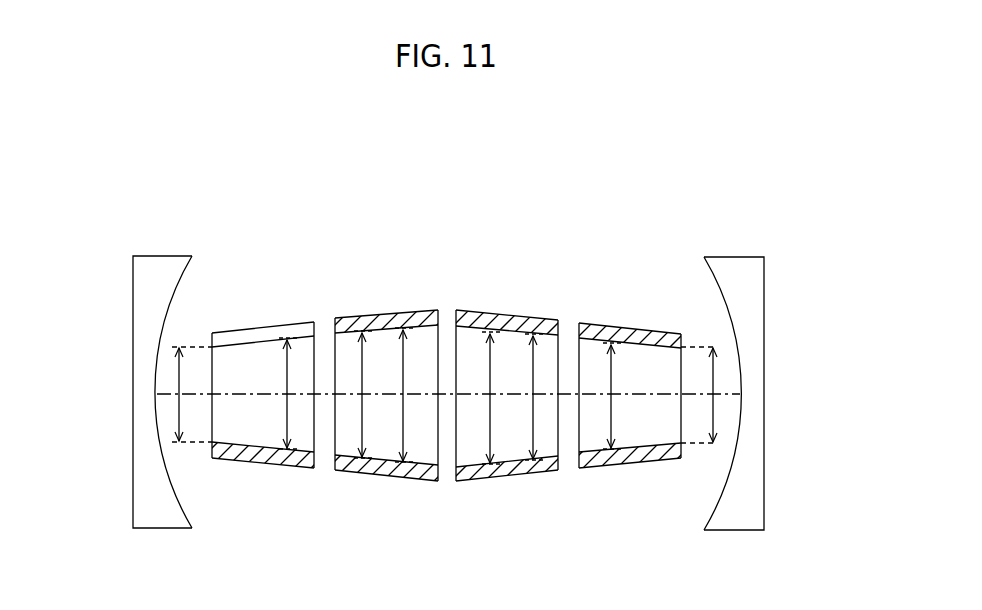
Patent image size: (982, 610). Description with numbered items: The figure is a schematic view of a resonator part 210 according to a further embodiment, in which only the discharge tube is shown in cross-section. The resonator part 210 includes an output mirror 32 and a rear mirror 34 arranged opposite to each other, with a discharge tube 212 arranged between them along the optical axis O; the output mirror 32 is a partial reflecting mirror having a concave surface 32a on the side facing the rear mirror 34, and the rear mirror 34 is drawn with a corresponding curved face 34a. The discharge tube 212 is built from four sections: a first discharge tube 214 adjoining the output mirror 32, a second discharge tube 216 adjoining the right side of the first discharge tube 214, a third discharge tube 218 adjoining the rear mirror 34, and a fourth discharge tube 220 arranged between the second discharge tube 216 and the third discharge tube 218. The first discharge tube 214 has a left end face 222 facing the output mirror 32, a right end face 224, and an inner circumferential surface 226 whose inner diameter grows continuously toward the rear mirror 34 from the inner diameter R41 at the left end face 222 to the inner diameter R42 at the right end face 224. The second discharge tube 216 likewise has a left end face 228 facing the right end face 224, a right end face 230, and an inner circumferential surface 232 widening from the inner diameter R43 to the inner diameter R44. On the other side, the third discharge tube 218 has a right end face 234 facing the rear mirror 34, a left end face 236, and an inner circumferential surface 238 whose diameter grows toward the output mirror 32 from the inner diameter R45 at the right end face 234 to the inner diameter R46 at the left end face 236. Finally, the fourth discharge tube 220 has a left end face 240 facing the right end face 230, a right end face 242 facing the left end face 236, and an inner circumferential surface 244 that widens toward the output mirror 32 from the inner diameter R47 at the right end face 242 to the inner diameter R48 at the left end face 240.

The resonator part 210 is at (740, 137).
The discharge tube 212 is at (449, 216).
The first discharge tube 214 is at (271, 289).
The second discharge tube 216 is at (387, 245).
The third discharge tube 218 is at (617, 287).
The fourth discharge tube 220 is at (512, 249).
The left end face 222 is at (210, 430).
The right end face 224 is at (315, 430).
The inner circumferential surface 226 is at (259, 444).
The left end face 228 is at (333, 355).
The right end face 230 is at (440, 448).
The inner circumferential surface 232 is at (382, 450).
The right end face 234 is at (682, 448).
The left end face 236 is at (577, 367).
The inner circumferential surface 238 is at (638, 442).
The left end face 240 is at (450, 362).
The right end face 242 is at (558, 440).
The inner circumferential surface 244 is at (513, 457).
The output mirror 32 is at (156, 263).
The concave surface 32a is at (181, 288).
The rear mirror 34 is at (737, 263).
The concave surface of second optical member 34a is at (708, 280).
The inner diameter R41 is at (178, 373).
The inner diameter R42 is at (274, 393).
The inner diameter R43 is at (362, 360).
The inner diameter R44 is at (403, 358).
The inner diameter R45 is at (717, 373).
The inner diameter R46 is at (626, 396).
The inner diameter R47 is at (533, 367).
The inner diameter R48 is at (490, 370).
The optical axis O is at (717, 395).